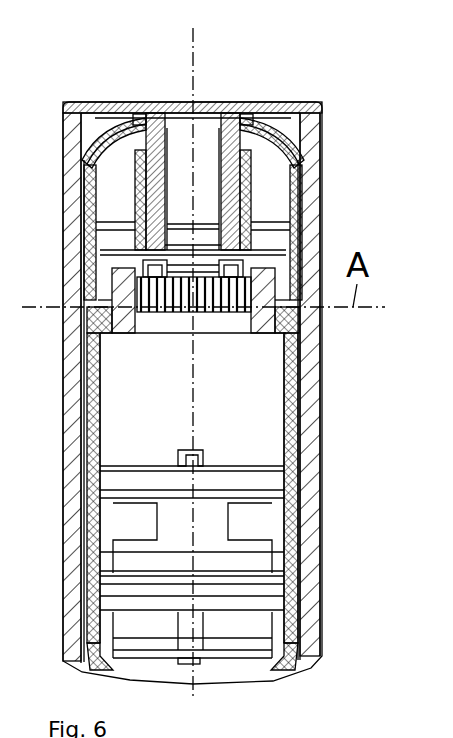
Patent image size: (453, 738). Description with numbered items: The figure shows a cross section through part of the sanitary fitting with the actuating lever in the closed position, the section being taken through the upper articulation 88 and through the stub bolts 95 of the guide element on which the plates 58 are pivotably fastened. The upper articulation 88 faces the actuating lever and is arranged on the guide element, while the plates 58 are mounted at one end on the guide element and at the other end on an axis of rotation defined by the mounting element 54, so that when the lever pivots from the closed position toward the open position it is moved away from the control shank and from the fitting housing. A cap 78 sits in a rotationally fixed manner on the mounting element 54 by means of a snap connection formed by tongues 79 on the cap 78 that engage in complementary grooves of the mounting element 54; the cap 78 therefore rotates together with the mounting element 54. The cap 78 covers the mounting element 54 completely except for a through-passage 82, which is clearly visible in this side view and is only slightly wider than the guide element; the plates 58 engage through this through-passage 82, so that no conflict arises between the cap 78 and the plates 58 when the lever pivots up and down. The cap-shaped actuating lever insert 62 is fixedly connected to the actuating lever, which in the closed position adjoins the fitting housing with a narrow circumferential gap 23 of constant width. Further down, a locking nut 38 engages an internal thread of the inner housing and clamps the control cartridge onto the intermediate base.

The gap 23 is at (306, 165).
The actuating lever insert 62 is at (263, 103).
The through-passage 82 is at (201, 167).
The plate 58 is at (158, 101).
The cap 78 is at (88, 157).
The stub bolts 95 is at (262, 162).
The mounting element 54 is at (84, 259).
The upper articulation 88 is at (255, 198).
The tongues 79 is at (290, 222).
The locking nut 38 is at (88, 331).